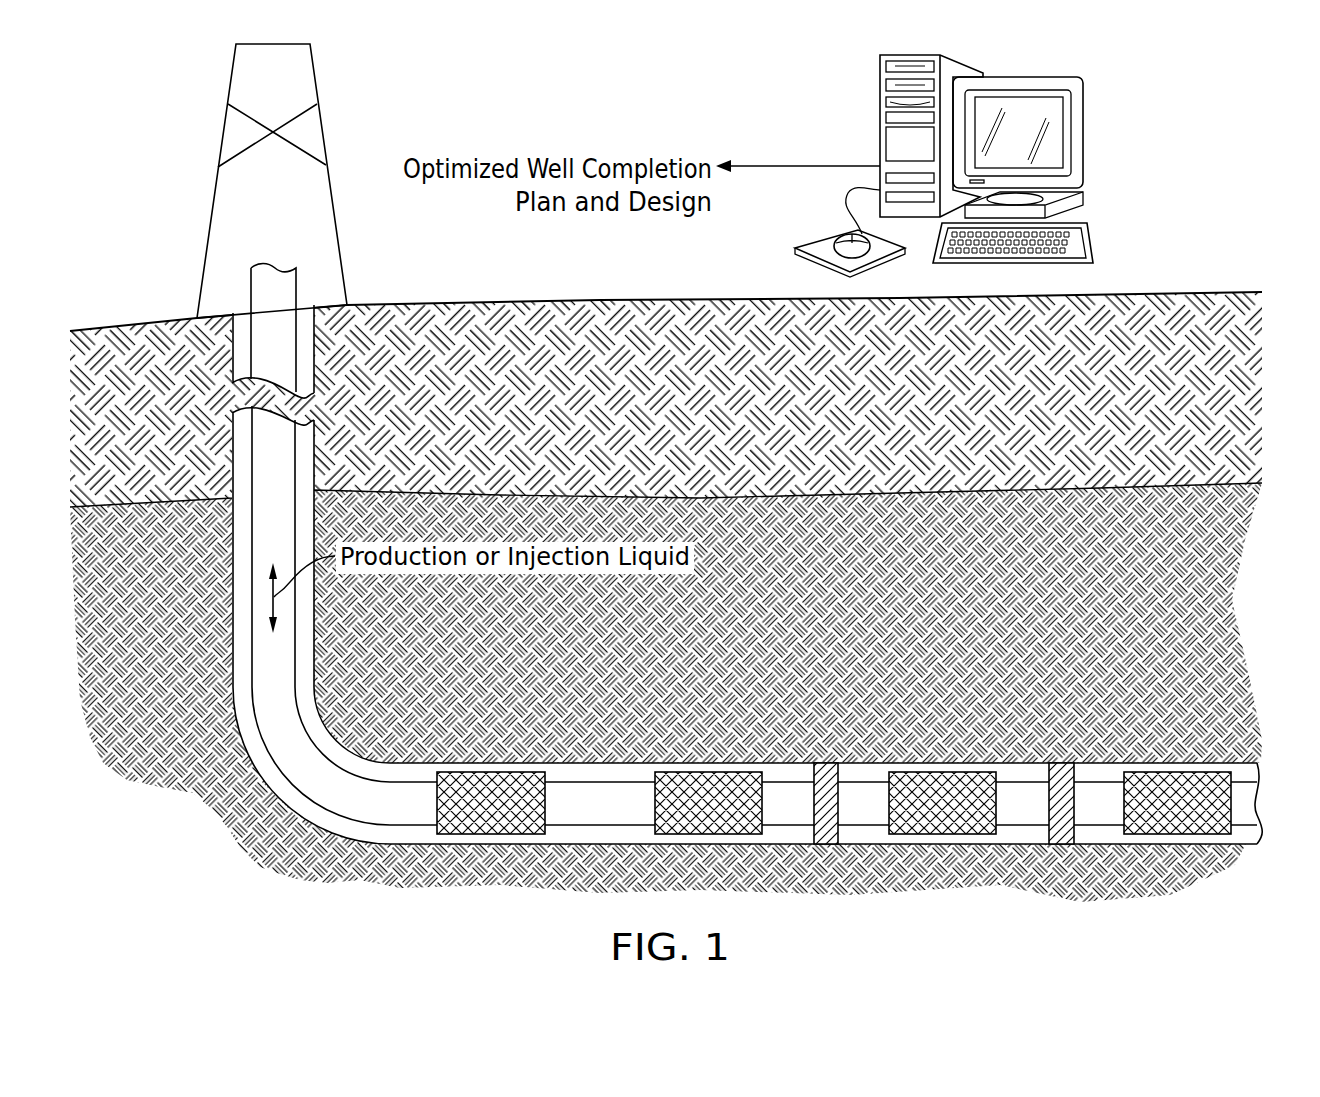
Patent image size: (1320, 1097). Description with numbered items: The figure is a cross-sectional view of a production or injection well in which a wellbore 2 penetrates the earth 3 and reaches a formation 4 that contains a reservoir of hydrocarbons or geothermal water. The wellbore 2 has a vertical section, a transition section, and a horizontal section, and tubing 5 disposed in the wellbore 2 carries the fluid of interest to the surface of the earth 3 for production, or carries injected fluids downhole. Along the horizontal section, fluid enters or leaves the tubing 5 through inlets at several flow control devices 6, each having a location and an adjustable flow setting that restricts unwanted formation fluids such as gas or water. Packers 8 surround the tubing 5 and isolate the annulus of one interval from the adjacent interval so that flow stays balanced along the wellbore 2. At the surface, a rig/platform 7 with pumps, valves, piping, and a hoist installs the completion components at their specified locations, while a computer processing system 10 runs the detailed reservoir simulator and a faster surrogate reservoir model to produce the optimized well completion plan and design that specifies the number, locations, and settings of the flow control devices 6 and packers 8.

The wellbore 2 is at (308, 358).
The earth 3 is at (779, 382).
The formation 4 is at (779, 563).
The tubing 5 is at (293, 528).
The flow control device 6 is at (1180, 783).
The rig/platform 7 is at (370, 90).
The packer 8 is at (1062, 779).
The computer processing system 10 is at (880, 115).